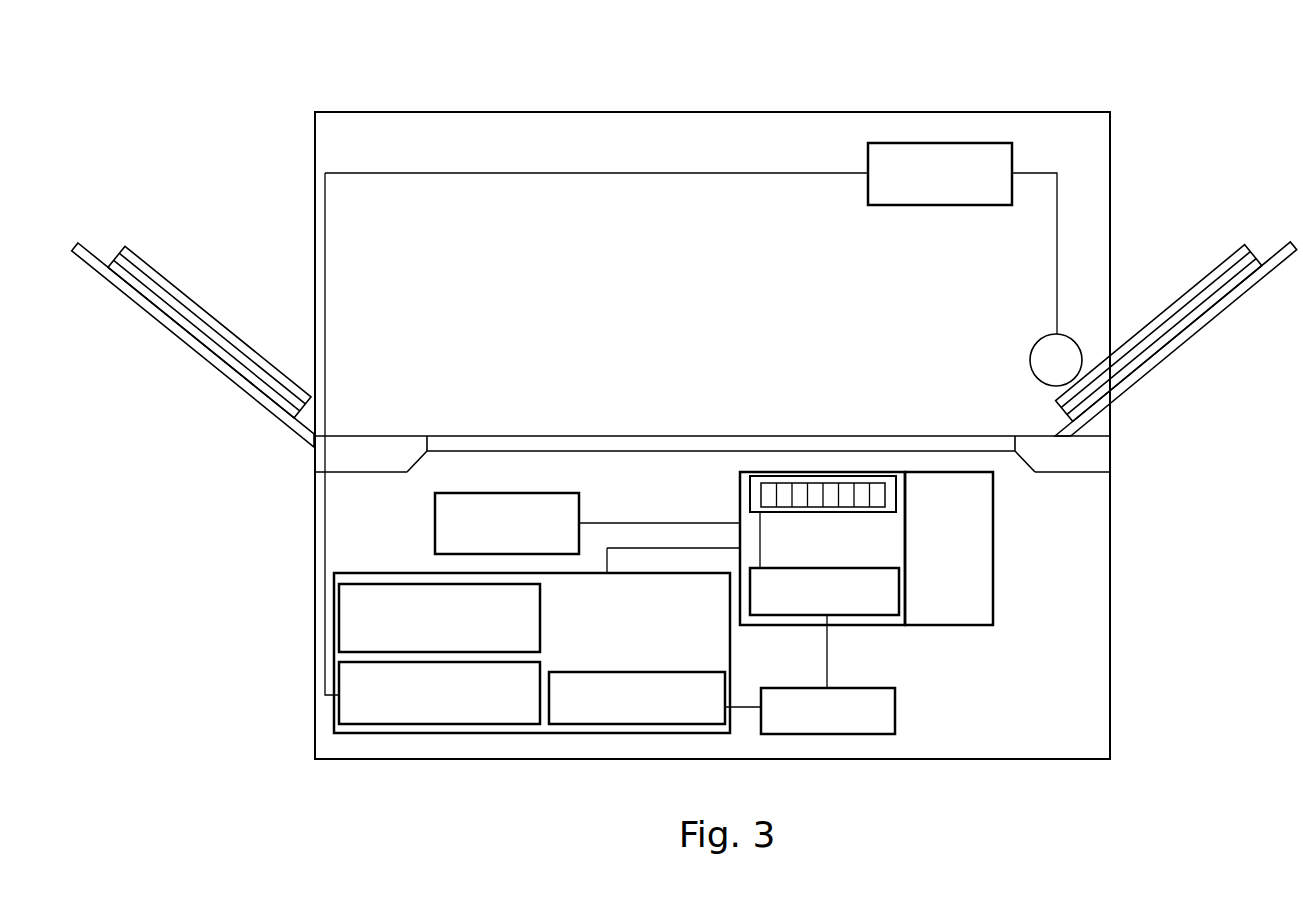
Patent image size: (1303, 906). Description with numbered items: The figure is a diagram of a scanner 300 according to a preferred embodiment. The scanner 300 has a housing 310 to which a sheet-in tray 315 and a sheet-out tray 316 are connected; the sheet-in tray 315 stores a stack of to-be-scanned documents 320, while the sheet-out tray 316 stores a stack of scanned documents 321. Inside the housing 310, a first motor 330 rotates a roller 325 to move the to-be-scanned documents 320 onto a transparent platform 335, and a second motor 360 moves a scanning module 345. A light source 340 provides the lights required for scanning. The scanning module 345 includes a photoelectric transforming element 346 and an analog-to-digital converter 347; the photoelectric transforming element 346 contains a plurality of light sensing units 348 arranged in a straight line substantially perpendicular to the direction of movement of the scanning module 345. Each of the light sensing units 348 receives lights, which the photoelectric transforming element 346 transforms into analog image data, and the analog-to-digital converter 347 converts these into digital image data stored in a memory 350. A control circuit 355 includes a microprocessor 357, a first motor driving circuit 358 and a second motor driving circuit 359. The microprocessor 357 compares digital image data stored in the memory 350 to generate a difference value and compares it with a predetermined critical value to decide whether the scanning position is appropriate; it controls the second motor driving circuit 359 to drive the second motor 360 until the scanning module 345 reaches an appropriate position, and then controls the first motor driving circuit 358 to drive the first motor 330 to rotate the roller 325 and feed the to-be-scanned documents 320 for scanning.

The scanner 300 is at (190, 120).
The housing 310 is at (363, 112).
The sheet-in tray 315 is at (1216, 318).
The sheet-out tray 316 is at (208, 364).
The to-be-scanned documents 320 is at (1190, 283).
The scanned documents 321 is at (203, 304).
The roller 325 is at (1066, 350).
The first motor 330 is at (915, 143).
The transparent platform 335 is at (771, 436).
The light source 340 is at (993, 505).
The scanning module 345 is at (880, 625).
The photoelectric transforming element 346 is at (750, 505).
The analog-to-digital converter 347 is at (773, 615).
The light sensing units 348 is at (876, 487).
The memory 350 is at (825, 734).
The control circuit 355 is at (339, 703).
The microprocessor 357 is at (680, 724).
The first motor driving circuit 358 is at (470, 724).
The second motor driving circuit 359 is at (339, 620).
The second motor 360 is at (435, 520).